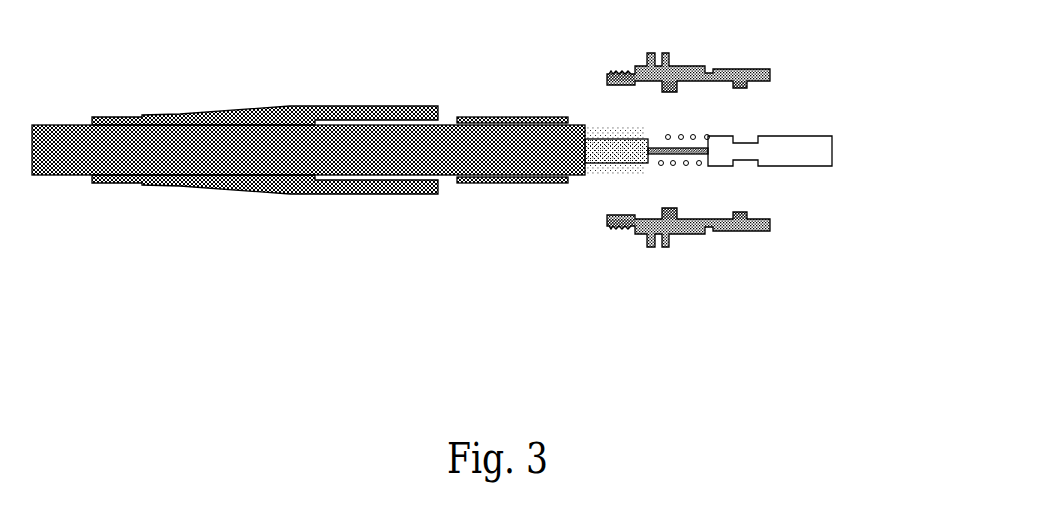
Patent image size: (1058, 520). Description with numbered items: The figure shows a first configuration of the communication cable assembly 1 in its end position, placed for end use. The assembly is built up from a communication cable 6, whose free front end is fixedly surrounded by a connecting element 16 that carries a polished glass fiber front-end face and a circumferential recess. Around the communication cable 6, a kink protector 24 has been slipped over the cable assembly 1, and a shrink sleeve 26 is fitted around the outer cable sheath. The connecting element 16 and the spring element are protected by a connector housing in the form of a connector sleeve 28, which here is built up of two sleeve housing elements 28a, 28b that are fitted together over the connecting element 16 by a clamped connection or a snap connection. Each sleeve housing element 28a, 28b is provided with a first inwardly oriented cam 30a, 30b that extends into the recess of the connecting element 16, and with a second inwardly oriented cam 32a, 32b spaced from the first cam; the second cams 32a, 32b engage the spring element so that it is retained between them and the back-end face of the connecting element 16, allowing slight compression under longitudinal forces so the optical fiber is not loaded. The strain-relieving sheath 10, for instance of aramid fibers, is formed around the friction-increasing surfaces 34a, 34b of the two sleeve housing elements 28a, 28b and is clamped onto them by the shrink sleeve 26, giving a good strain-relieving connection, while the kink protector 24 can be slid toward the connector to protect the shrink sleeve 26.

The communication cable assembly 1 is at (308, 228).
The communication cable 6 is at (288, 156).
The strain-relieving sheath 10 is at (625, 177).
The connecting element 16 is at (815, 145).
The kink protector 24 is at (208, 110).
The shrink sleeve 26 is at (523, 117).
The connector sleeve 28 is at (700, 140).
The sleeve housing element 28a is at (700, 213).
The sleeve housing element 28b is at (700, 88).
The first inwardly oriented cam 30a is at (743, 213).
The first inwardly oriented cam 30b is at (743, 88).
The second inwardly oriented cam 32a is at (677, 213).
The second inwardly oriented cam 32b is at (677, 87).
The surface 34a is at (627, 230).
The surface 34b is at (627, 73).